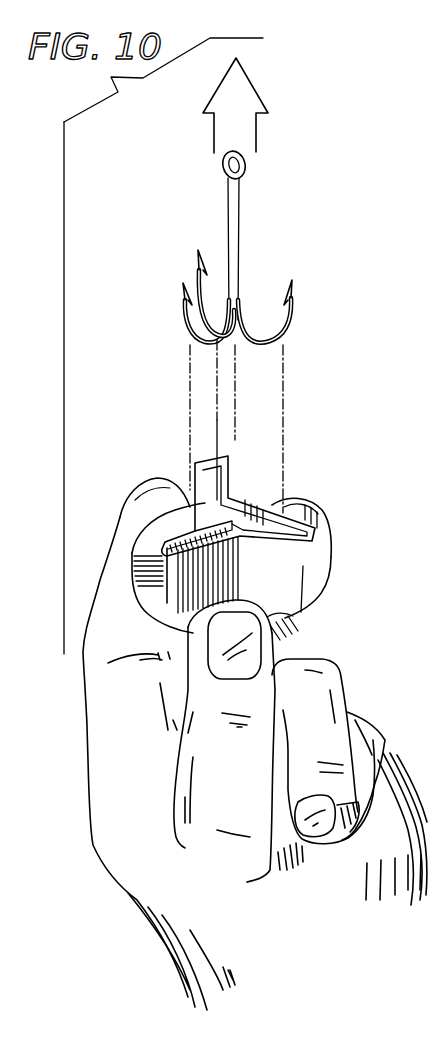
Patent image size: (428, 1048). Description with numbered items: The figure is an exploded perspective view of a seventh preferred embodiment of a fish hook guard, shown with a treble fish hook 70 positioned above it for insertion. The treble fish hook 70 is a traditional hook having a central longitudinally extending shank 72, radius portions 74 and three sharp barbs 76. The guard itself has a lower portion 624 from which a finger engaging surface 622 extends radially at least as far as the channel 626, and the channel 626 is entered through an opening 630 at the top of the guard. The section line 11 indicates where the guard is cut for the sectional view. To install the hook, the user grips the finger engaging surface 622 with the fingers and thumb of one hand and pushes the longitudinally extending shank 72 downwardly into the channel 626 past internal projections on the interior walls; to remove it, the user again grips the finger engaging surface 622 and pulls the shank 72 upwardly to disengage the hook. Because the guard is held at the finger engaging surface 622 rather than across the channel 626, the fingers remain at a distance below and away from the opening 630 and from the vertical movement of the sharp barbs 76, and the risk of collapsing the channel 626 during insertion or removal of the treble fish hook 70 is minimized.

The treble fish hook 70 is at (293, 228).
The longitudinally extending shank 72 is at (237, 247).
The radius portions 74 is at (190, 372).
The sharp barbs 76 is at (198, 262).
The section line 11- 11 is at (125, 493).
The finger engaging surface 622 is at (143, 547).
The lower portion 624 is at (300, 623).
The channel 626 is at (202, 490).
The opening 630 is at (238, 510).